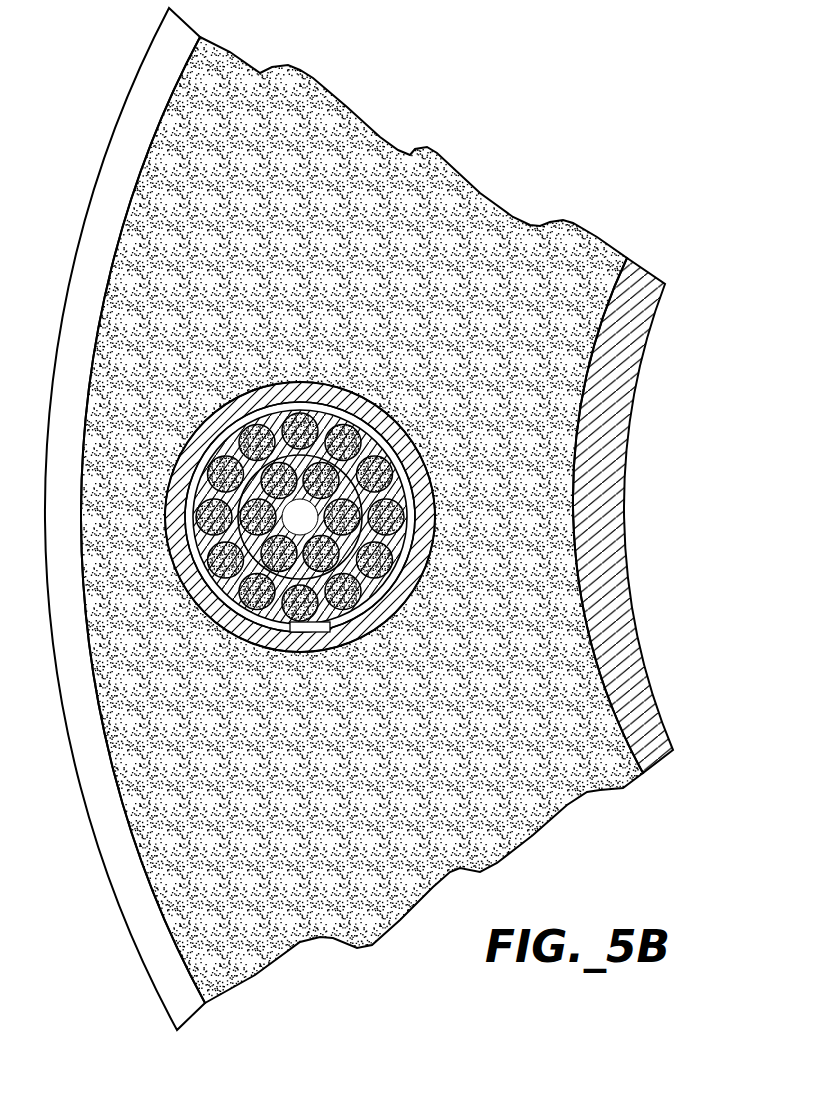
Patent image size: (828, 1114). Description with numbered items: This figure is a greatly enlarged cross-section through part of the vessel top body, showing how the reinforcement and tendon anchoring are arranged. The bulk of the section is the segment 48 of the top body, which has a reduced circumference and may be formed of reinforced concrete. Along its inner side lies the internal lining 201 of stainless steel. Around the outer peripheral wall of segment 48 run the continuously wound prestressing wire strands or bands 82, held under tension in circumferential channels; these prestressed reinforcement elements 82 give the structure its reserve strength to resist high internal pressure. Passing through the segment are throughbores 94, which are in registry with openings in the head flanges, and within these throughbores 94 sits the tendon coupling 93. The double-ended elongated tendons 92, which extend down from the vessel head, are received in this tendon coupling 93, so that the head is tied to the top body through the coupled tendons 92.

The segment 48 is at (582, 262).
The prestressing wire strands or bands 82 is at (130, 918).
The internal lining 201 is at (628, 546).
The tendons 92 is at (380, 613).
The tendon coupling 93 is at (328, 613).
The throughbores 94 is at (227, 630).